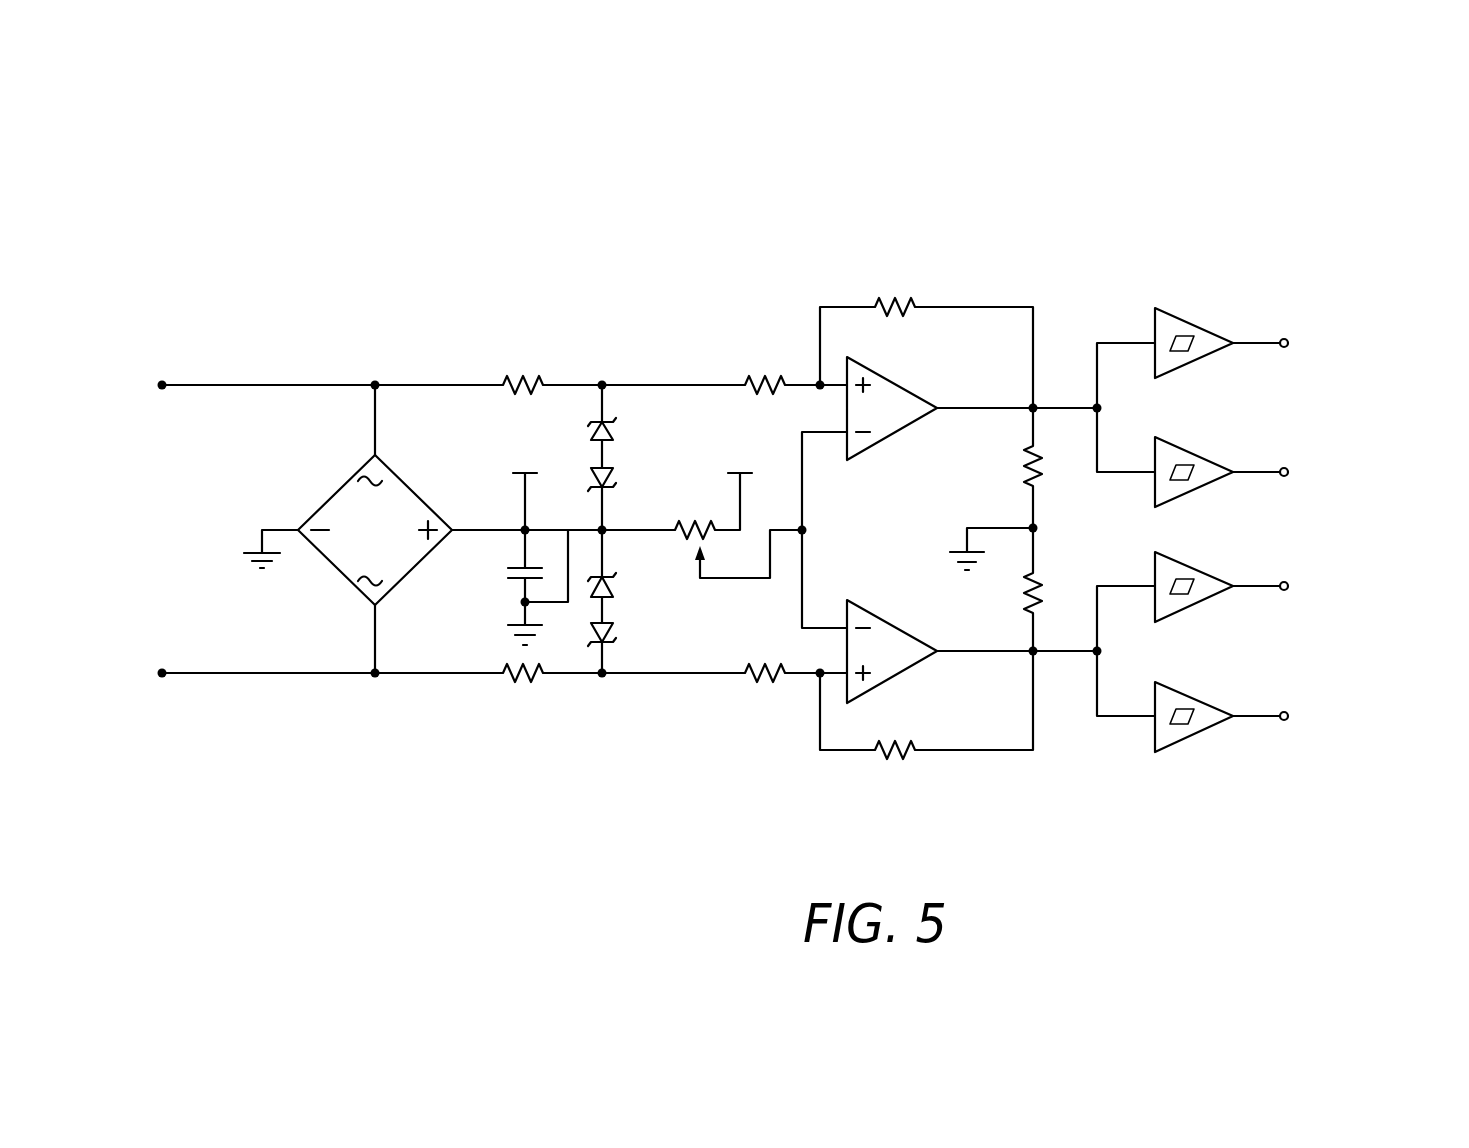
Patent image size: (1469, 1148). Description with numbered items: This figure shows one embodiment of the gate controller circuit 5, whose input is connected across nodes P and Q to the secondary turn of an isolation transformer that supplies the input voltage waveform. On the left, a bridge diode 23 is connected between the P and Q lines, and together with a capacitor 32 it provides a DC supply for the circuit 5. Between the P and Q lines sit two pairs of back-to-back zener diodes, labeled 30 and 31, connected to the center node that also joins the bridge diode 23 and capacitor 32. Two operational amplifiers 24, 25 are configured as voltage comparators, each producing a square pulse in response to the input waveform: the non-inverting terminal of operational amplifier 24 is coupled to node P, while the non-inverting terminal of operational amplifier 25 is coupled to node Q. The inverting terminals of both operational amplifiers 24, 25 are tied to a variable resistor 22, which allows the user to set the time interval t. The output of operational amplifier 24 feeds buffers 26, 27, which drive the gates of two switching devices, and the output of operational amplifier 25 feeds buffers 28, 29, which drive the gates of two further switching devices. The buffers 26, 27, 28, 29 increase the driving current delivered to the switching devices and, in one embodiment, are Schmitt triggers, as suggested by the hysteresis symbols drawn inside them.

The gate controller circuit 5 is at (900, 224).
The variable resistor 22 is at (693, 545).
The bridge diode 23 is at (403, 483).
The operational amplifier 24 is at (883, 383).
The operational amplifier 25 is at (883, 624).
The buffer 26 is at (1180, 319).
The buffer 27 is at (1180, 448).
The buffer 28 is at (1180, 561).
The buffer 29 is at (1180, 691).
The zener diode pair 30 is at (602, 385).
The zener diode pair 31 is at (602, 673).
The capacitor 32 is at (500, 573).